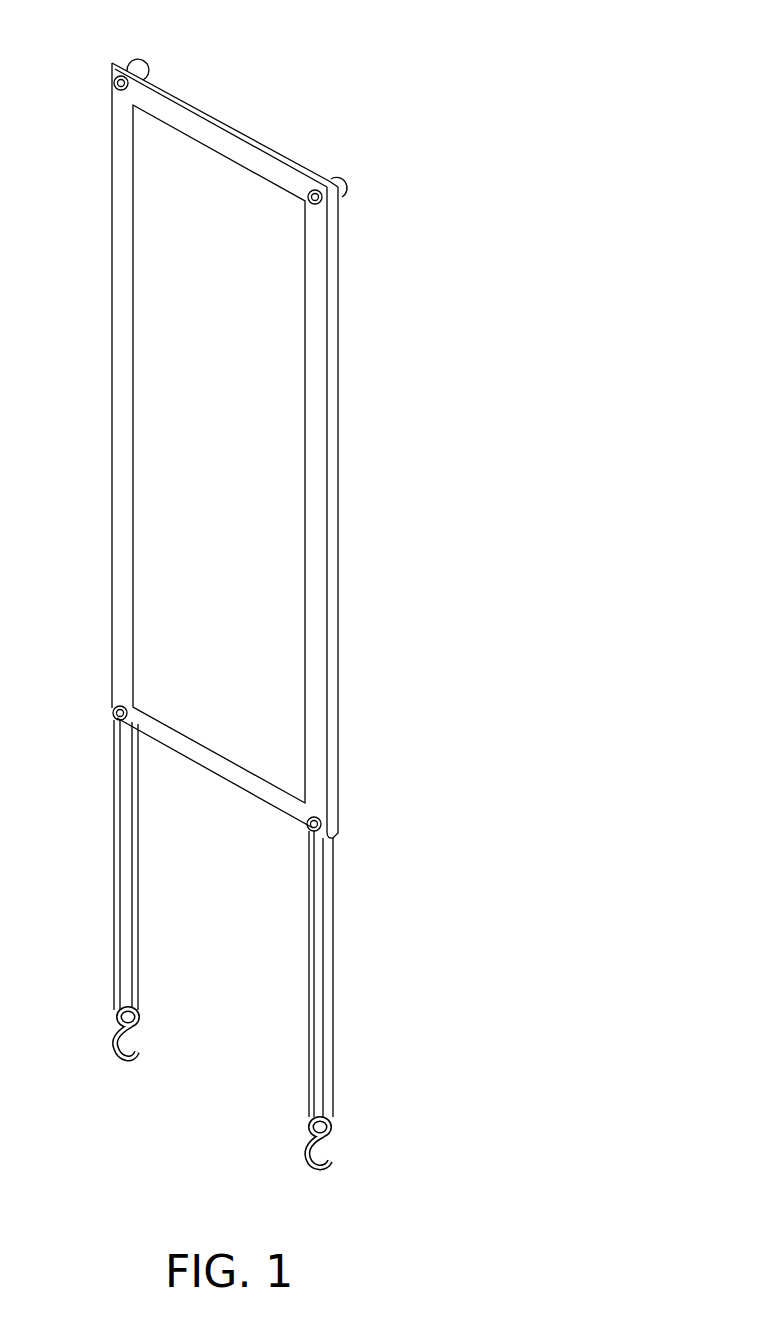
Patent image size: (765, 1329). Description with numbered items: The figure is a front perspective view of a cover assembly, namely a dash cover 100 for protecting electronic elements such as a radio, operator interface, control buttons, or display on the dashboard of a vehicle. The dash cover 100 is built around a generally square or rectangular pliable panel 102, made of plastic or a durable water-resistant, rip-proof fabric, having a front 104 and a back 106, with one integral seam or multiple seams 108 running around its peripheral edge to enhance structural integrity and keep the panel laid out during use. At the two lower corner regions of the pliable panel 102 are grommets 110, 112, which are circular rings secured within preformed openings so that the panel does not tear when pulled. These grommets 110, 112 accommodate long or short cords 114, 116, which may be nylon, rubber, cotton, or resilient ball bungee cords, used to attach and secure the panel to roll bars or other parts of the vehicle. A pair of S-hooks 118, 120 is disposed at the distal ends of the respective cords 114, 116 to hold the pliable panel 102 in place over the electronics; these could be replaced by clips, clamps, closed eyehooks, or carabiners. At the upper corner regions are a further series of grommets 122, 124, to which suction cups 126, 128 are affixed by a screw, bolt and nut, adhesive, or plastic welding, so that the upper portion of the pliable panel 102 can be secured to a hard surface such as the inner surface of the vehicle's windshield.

The dash cover 100 is at (437, 94).
The pliable panel 102 is at (338, 390).
The front 104 is at (292, 590).
The back 106 is at (261, 134).
The seam 108 is at (320, 745).
The grommet 110 is at (118, 705).
The grommet 112 is at (310, 828).
The cord 114 is at (114, 838).
The cord 116 is at (334, 978).
The S-hook 118 is at (140, 1030).
The S-hook 120 is at (334, 1157).
The grommet 122 is at (109, 88).
The grommet 124 is at (322, 205).
The suction cup 126 is at (136, 60).
The suction cup 128 is at (334, 178).